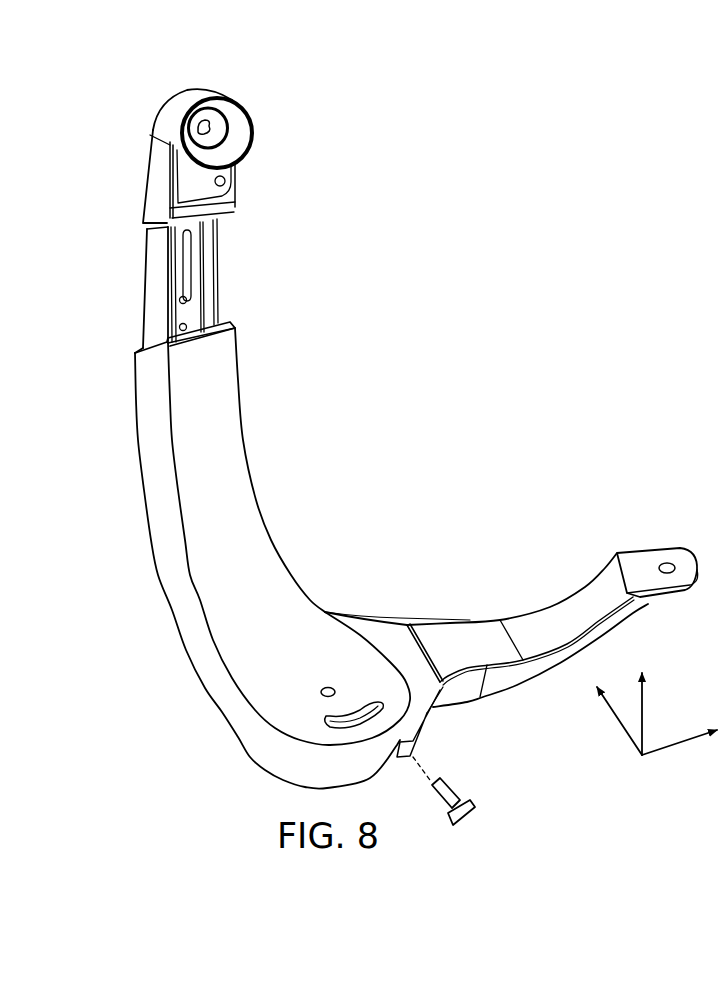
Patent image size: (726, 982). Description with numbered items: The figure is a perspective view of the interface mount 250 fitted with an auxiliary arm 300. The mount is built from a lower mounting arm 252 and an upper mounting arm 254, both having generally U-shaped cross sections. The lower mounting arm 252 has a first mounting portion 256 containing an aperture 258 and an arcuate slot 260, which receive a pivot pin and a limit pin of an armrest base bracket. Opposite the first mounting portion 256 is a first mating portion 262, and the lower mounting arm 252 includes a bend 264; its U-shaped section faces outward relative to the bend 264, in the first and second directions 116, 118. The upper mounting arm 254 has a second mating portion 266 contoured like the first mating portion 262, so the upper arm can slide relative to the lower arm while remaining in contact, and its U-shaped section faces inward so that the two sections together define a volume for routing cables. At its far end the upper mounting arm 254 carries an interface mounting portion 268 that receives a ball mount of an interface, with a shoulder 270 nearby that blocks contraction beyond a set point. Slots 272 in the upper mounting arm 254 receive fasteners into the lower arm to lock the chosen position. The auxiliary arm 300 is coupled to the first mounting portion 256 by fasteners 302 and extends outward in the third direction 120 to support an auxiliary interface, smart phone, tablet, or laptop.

The interface mount 250 is at (412, 430).
The lower mounting arm 252 is at (240, 712).
The upper mounting arm 254 is at (157, 290).
The first mounting portion 256 is at (240, 763).
The aperture 258 is at (330, 687).
The arcuate slot 260 is at (403, 707).
The first mating portion 262 is at (100, 323).
The bend 264 is at (300, 525).
The second mating portion 266 is at (258, 362).
The interface mounting portion 268 is at (192, 97).
The shoulder 270 is at (222, 203).
The slots 272 is at (190, 253).
The auxiliary arm 300 is at (583, 590).
The fasteners 302 is at (463, 822).
The first direction 116 is at (620, 733).
The second direction 118 is at (643, 720).
The third direction 120 is at (675, 747).